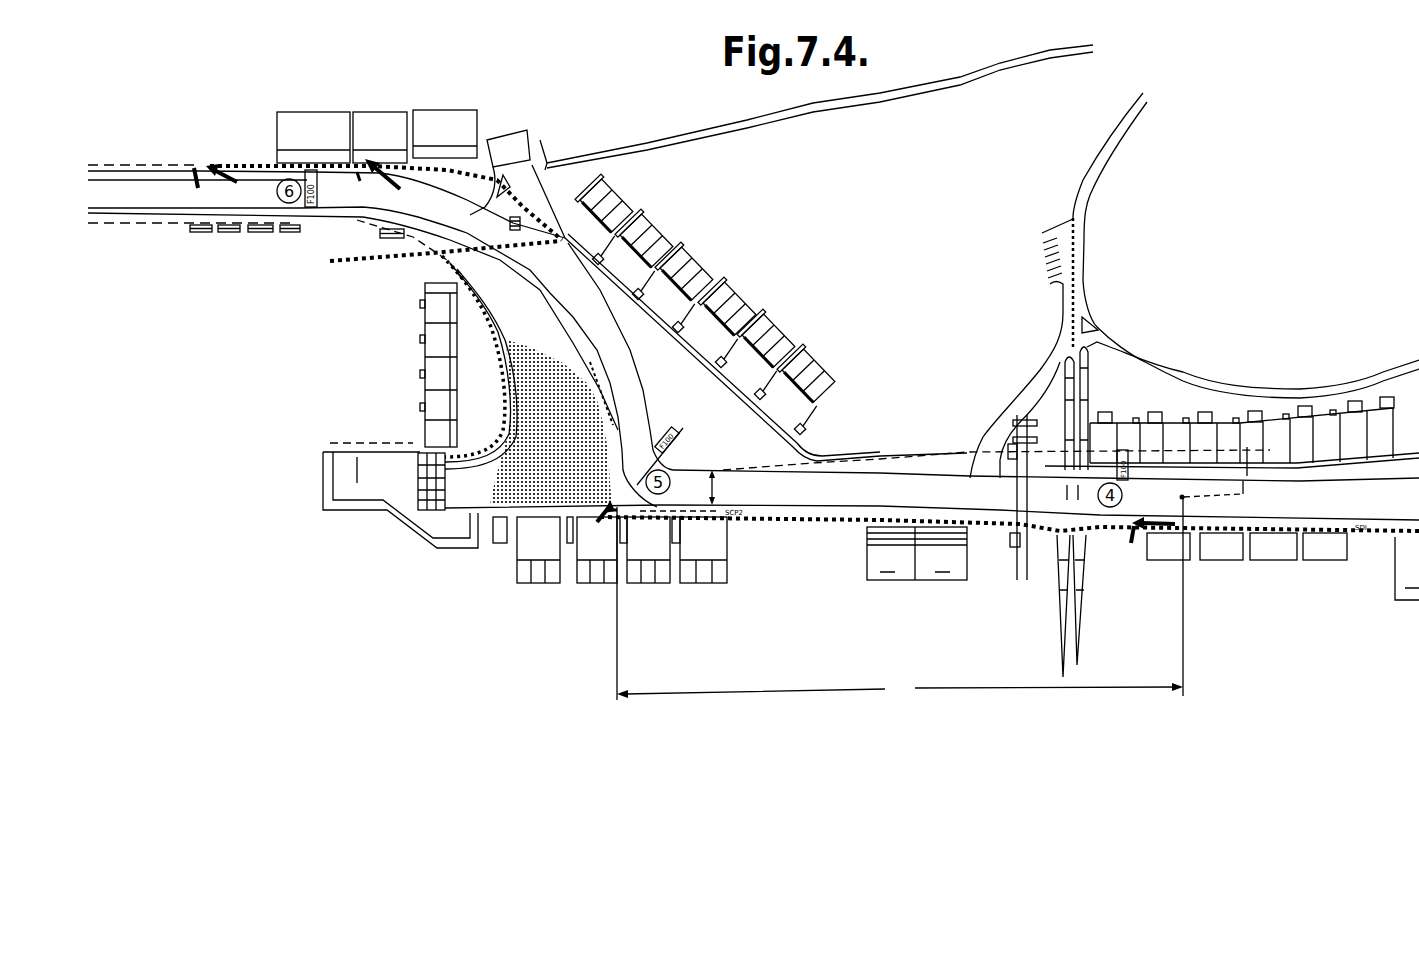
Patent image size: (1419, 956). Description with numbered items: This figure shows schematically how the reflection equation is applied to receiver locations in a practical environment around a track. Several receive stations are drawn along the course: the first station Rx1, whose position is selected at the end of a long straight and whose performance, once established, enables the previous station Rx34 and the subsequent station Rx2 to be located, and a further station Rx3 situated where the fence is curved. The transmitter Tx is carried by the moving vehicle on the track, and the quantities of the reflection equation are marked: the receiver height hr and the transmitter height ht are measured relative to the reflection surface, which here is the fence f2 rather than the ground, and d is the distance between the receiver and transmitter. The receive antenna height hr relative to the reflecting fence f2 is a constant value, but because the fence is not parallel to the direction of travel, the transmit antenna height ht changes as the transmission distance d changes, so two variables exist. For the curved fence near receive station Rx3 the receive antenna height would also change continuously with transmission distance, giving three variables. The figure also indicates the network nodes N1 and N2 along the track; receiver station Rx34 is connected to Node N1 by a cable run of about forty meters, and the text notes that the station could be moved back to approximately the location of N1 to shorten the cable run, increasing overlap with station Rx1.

The first receiver station Rx1 is at (598, 520).
The subsequent receiver station Rx2 is at (368, 160).
The receiver station at a curved fence Rx3 is at (195, 172).
The previous receiver station Rx34 is at (1133, 530).
The transmitter Tx is at (1195, 493).
The transmitter height ht is at (1261, 477).
The receiver height hr is at (713, 471).
The distance between receiver and transmitter d is at (900, 602).
The fence f2 is at (886, 450).
The Node 1 N1 is at (1027, 540).
The Node 2 N2 is at (418, 452).